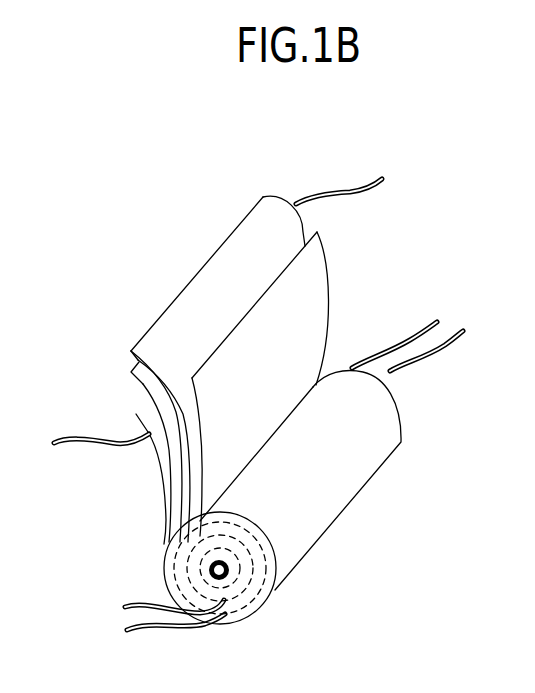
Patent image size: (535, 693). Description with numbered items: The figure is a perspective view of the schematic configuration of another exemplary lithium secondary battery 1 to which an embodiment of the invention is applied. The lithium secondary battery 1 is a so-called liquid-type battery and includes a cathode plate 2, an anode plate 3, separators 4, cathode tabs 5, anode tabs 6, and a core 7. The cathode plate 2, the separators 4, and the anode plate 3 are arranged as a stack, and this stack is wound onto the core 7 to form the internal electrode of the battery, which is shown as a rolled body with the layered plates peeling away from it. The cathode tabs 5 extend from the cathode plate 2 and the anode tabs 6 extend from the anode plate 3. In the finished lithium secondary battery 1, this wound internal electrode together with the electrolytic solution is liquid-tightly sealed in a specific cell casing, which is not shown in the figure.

The lithium secondary battery 1 is at (356, 512).
The cathode plate 2 is at (172, 466).
The anode plate 3 is at (205, 287).
The separators 4 is at (132, 382).
The cathode tabs 5 is at (70, 437).
The anode tabs 6 is at (338, 198).
The core 7 is at (227, 575).